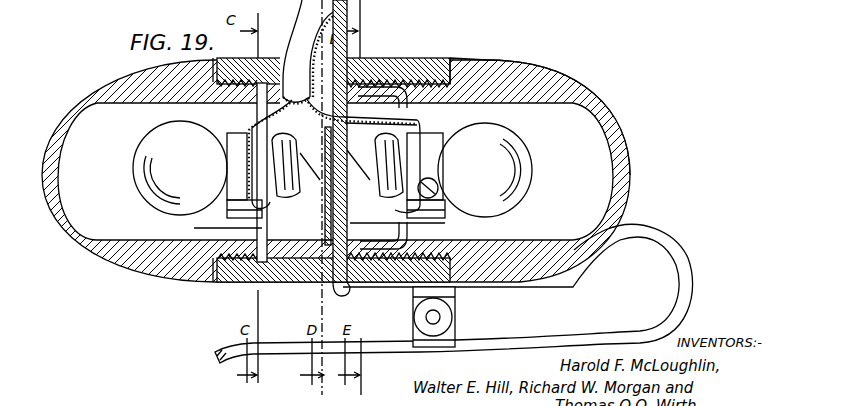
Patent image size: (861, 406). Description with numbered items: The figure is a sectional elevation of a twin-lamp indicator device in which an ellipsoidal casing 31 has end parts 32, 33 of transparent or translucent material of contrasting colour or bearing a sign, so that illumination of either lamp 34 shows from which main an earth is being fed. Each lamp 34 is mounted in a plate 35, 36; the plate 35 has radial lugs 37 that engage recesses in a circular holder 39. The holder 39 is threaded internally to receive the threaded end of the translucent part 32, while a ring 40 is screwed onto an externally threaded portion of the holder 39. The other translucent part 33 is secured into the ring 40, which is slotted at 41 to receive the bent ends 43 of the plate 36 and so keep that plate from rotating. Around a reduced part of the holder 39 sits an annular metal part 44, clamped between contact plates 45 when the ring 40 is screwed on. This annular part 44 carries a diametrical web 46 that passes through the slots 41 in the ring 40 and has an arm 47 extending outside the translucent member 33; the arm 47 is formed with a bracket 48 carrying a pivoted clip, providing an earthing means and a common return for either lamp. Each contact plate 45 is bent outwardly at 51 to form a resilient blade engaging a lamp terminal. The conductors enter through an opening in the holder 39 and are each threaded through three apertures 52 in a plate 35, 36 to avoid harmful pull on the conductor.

The casing 31 is at (456, 50).
The end part 32 is at (70, 113).
The end part 33 is at (585, 92).
The lamp 34 is at (172, 158).
The plate 35 is at (308, 184).
The plate 36 is at (405, 108).
The radial lugs 37 is at (263, 75).
The circular holder 39 is at (296, 283).
The ring 40 is at (422, 78).
The slots 41 is at (358, 70).
The bent ends 43 is at (380, 90).
The annular metal part 44 is at (336, 16).
The contact plates 45 is at (336, 226).
The diametrical web 46 is at (322, 139).
The arm 47 is at (327, 284).
The bracket 48 is at (456, 302).
The resilient blade 51 is at (268, 117).
The apertures 52 is at (247, 185).